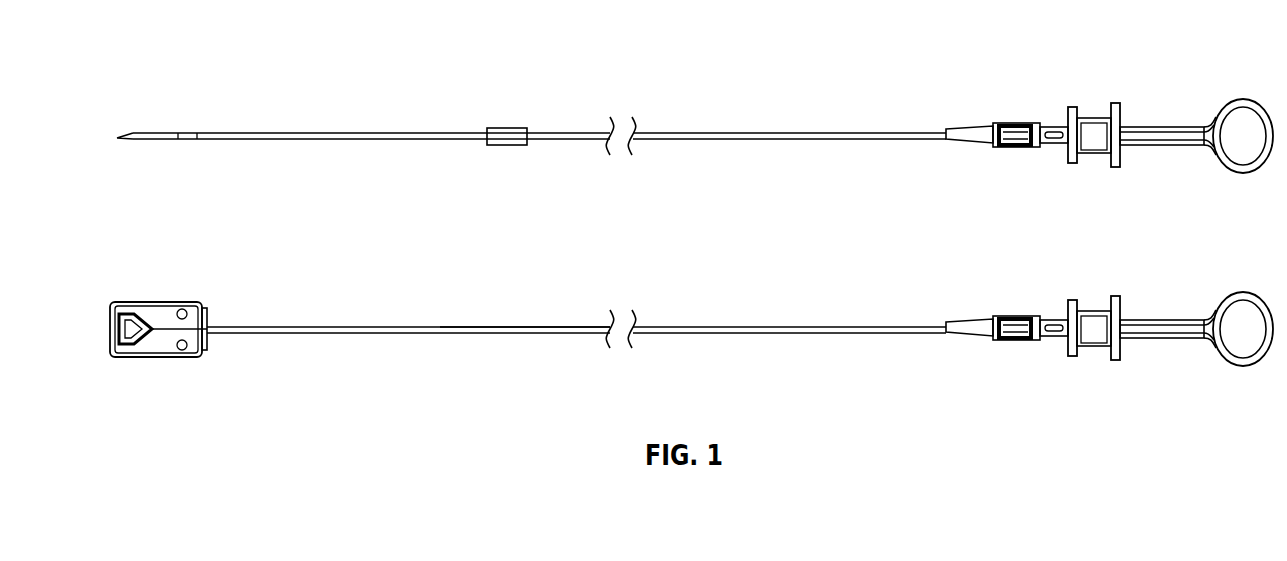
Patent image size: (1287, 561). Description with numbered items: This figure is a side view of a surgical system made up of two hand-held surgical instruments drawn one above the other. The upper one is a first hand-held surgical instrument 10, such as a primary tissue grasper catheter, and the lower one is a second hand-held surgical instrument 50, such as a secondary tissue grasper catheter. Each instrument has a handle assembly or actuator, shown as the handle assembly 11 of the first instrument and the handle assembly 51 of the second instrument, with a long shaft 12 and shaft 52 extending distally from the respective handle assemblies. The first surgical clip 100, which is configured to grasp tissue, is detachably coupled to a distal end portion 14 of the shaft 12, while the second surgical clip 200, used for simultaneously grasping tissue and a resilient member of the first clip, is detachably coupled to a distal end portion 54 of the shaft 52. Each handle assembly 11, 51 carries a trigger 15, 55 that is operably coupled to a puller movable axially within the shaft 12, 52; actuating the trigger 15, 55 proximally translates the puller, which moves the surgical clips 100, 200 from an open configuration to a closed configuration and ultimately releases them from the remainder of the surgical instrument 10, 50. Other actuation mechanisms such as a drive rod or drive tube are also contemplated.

The first hand-held surgical instrument 10 is at (858, 132).
The handle assembly 11 is at (1174, 131).
The shaft 12 is at (748, 142).
The distal end portion 14 is at (565, 133).
The trigger 15 is at (1092, 117).
The first surgical clip 100 is at (187, 134).
The second hand-held surgical instrument 50 is at (858, 325).
The handle assembly 51 is at (1175, 324).
The shaft 52 is at (720, 335).
The distal end portion 54 is at (535, 327).
The trigger 55 is at (1093, 310).
The second surgical clip 200 is at (141, 349).